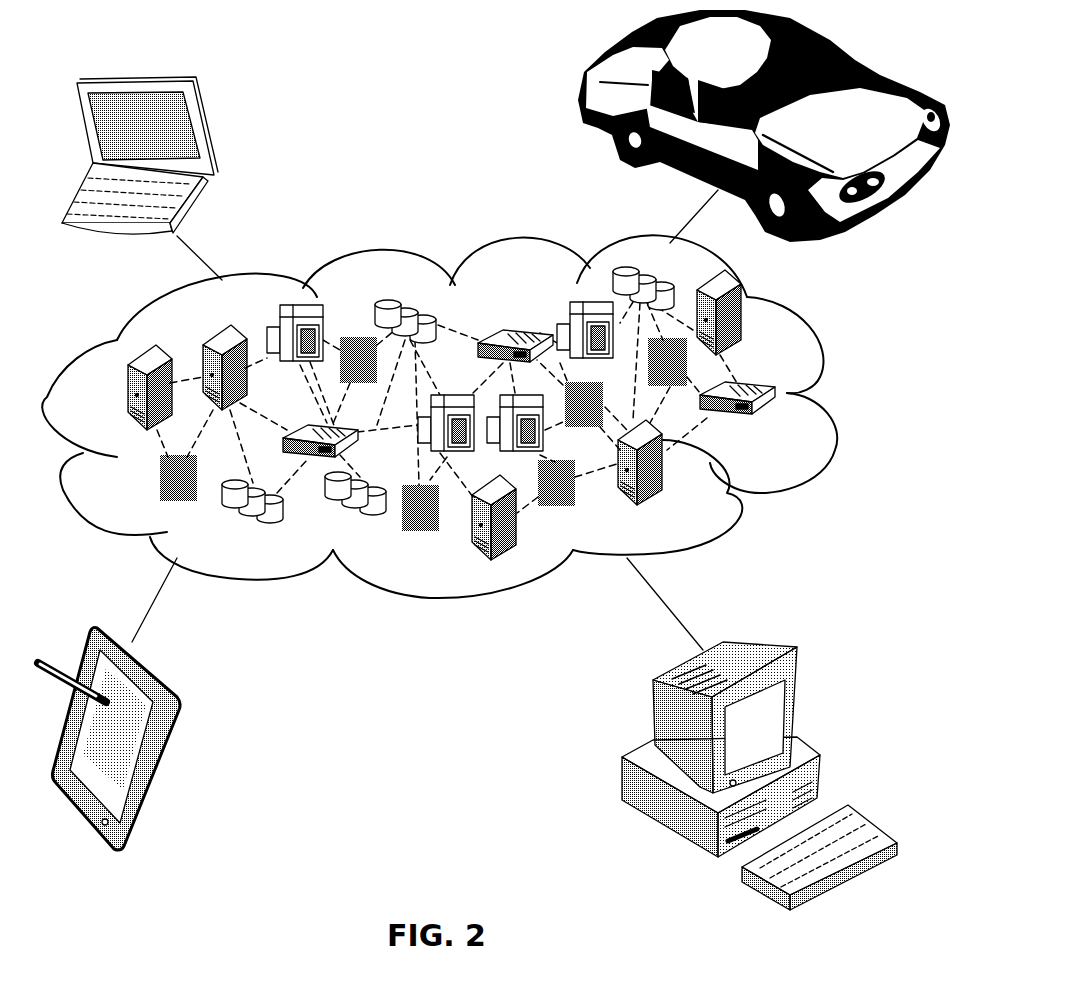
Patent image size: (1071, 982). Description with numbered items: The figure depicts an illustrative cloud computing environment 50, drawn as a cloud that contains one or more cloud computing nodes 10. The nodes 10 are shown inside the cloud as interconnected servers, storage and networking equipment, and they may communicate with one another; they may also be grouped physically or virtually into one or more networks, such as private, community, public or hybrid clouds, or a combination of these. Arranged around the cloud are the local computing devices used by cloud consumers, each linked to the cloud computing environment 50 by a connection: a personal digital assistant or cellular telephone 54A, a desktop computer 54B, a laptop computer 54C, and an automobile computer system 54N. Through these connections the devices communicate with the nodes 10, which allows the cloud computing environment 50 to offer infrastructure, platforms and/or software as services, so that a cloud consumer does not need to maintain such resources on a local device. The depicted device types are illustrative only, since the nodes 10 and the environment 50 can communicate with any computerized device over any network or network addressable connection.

The cloud computing nodes 10 is at (790, 430).
The cloud computing environment 50 is at (474, 416).
The personal digital assistant or cellular telephone 54A is at (172, 728).
The desktop computer 54B is at (763, 642).
The laptop computer 54C is at (207, 128).
The automobile computer system 54N is at (583, 98).